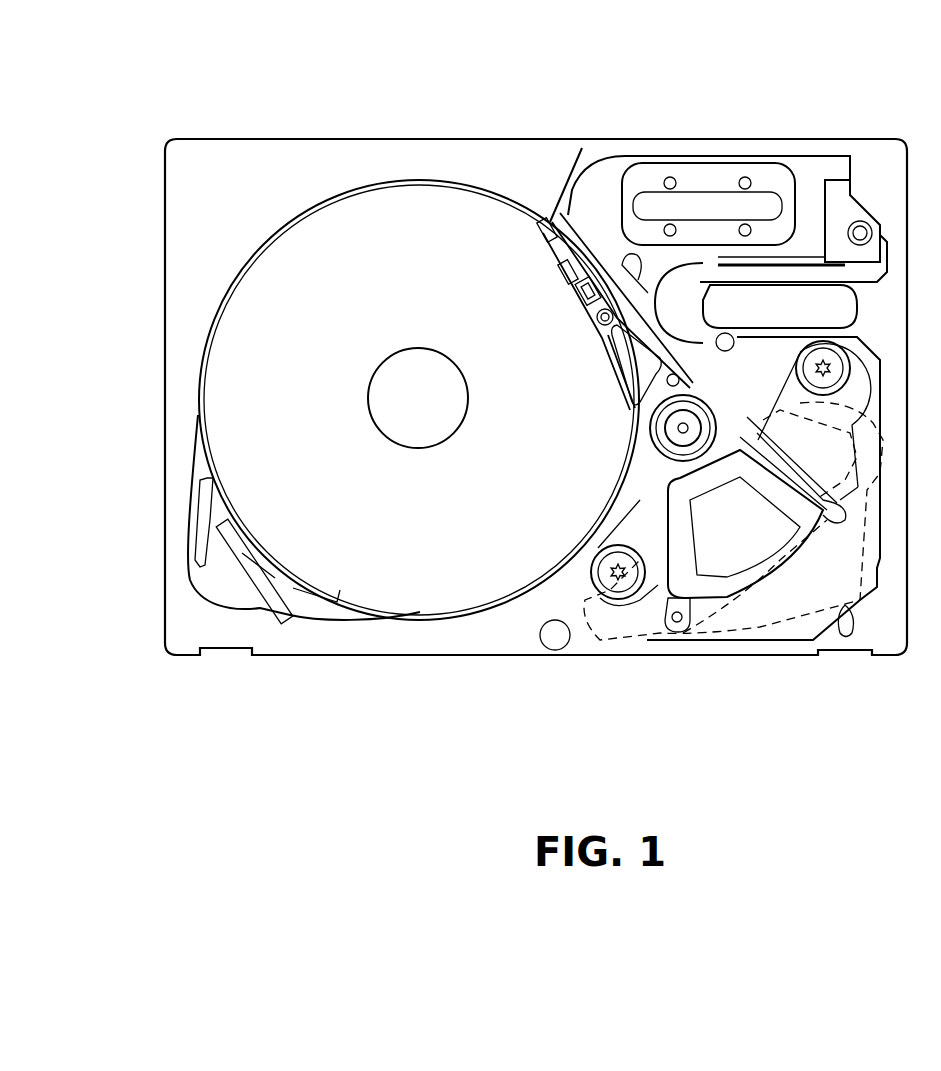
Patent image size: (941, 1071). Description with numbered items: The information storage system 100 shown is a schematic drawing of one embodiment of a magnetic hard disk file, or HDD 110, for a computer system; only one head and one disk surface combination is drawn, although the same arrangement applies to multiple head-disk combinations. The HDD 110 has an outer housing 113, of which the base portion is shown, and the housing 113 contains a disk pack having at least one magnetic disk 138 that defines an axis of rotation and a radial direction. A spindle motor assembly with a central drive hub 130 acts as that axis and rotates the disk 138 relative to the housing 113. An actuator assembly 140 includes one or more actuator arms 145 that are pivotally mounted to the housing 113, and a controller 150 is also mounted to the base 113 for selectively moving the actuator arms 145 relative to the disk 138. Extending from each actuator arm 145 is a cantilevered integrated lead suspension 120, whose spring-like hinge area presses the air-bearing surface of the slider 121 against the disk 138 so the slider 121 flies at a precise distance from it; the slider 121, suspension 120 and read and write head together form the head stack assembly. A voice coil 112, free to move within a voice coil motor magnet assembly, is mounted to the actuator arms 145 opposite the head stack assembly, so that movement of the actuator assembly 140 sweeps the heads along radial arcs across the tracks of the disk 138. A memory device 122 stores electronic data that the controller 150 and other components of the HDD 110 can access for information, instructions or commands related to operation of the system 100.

The disk drive 100 is at (483, 404).
The HDD 110 is at (278, 128).
The outer housing 113 is at (528, 348).
The slider 121 is at (718, 348).
The magnetic disk 138 is at (414, 168).
The central drive hub 130 is at (418, 398).
The integrated lead suspension 120 is at (526, 274).
The actuator arm 145 is at (596, 358).
The actuator assembly 140 is at (670, 459).
The voice coil 112 is at (678, 572).
The memory device 122 is at (733, 593).
The controller 150 is at (825, 540).